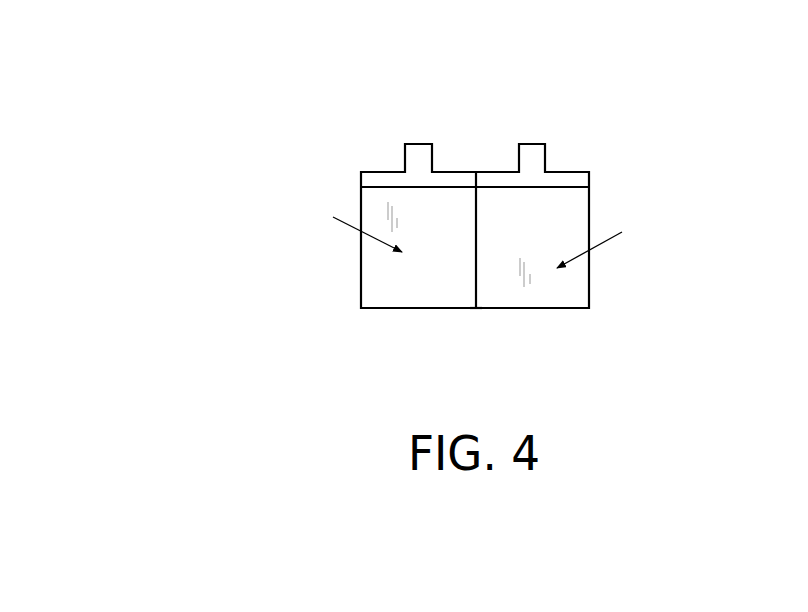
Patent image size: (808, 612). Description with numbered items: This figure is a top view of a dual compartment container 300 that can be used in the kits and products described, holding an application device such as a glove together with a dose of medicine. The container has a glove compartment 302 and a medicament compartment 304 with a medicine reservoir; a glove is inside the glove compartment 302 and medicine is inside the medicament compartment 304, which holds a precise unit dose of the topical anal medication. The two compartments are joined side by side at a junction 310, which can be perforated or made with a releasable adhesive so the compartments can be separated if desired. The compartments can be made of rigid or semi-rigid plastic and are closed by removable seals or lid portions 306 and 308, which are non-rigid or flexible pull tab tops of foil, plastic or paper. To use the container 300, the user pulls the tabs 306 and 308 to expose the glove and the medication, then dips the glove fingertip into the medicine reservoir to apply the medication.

The dual compartment container 300 is at (445, 80).
The glove compartment 302 is at (375, 177).
The medicament compartment 304 is at (570, 177).
The removable seal or lid portion 306 is at (387, 282).
The removable seal or lid portion 308 is at (573, 285).
The junction 310 is at (477, 322).